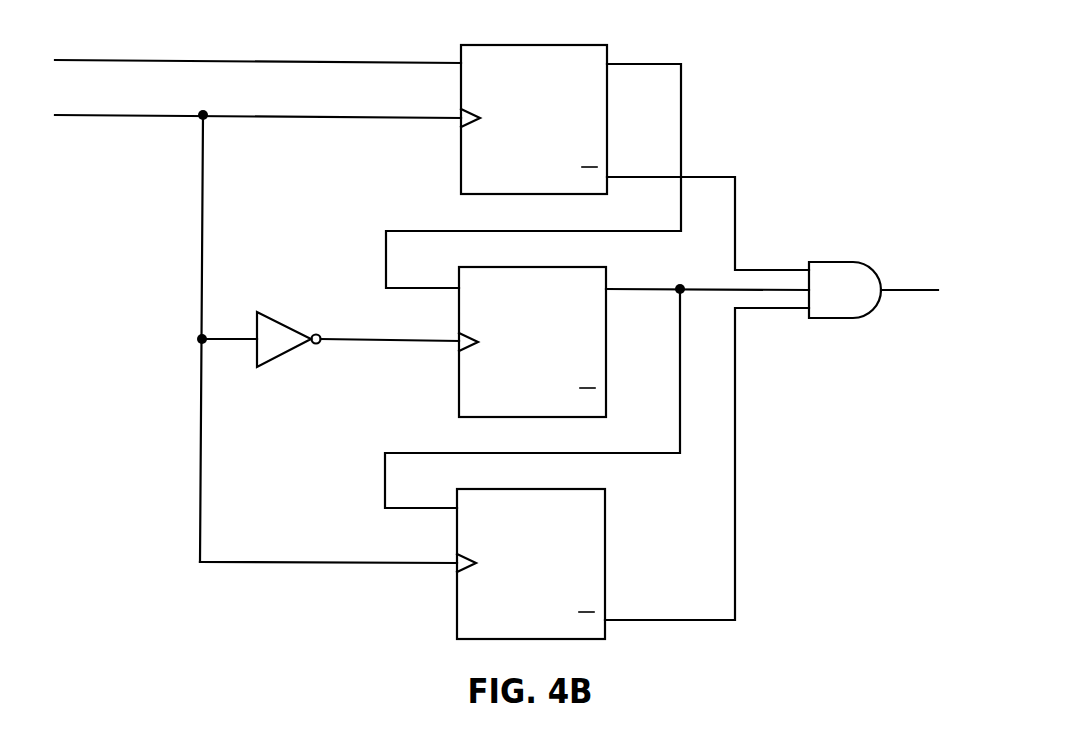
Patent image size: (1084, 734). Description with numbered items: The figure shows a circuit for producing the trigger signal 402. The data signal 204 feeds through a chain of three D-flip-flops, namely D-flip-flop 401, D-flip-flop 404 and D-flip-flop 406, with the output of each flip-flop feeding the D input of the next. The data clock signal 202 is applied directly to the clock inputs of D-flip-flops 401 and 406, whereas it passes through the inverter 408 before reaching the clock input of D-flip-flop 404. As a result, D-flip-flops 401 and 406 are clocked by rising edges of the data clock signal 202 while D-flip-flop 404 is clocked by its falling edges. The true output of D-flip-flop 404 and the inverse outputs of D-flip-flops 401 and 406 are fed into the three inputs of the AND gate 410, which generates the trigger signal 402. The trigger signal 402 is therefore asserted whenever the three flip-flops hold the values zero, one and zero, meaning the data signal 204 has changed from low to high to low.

The data signal 204 is at (258, 59).
The data clock signal 202 is at (258, 327).
The D-flip-flop 401 is at (597, 166).
The D-flip-flop 404 is at (597, 387).
The D-flip-flop 406 is at (633, 473).
The inverter 408 is at (358, 350).
The AND gate 410 is at (845, 290).
The trigger signal 402 is at (919, 259).